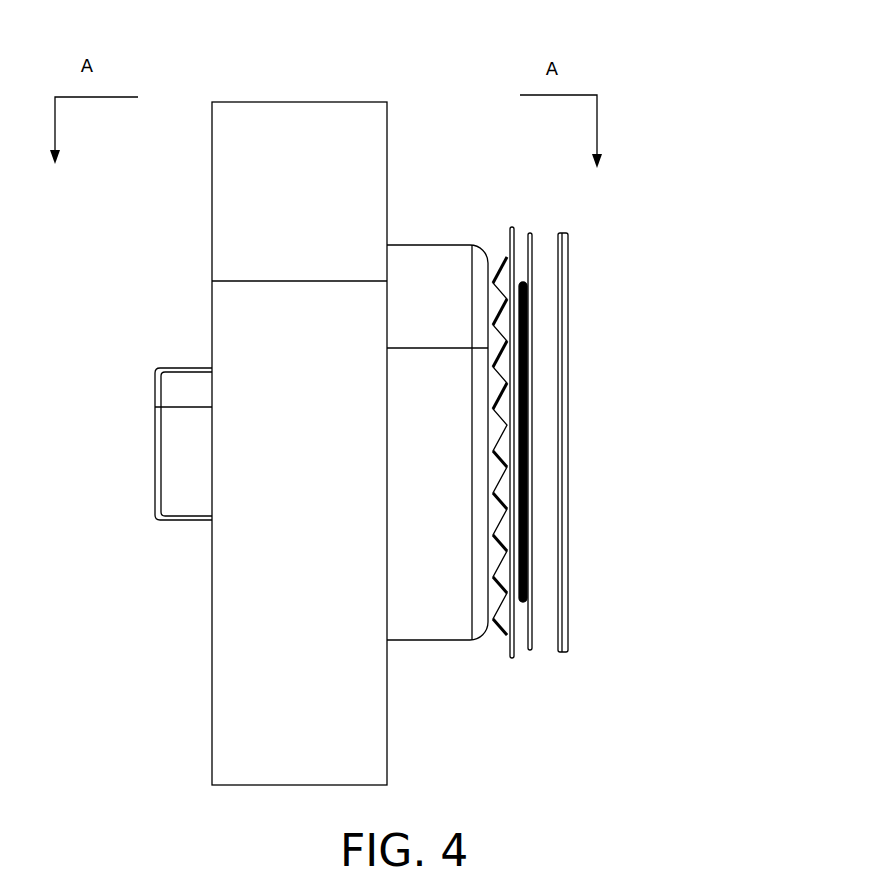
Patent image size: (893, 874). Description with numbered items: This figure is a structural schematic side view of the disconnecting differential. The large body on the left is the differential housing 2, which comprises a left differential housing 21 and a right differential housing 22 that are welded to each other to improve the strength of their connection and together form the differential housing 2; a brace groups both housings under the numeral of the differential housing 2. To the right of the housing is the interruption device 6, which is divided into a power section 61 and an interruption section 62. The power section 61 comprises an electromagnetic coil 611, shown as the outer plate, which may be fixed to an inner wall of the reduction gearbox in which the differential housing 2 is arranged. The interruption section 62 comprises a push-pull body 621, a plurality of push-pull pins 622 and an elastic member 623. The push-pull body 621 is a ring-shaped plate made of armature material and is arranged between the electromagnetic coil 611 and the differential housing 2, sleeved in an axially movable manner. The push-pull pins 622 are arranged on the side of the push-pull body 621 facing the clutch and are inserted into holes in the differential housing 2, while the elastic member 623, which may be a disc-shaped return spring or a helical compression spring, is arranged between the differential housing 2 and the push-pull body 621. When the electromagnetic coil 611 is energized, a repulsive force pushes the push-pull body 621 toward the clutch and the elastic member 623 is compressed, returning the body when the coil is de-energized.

The differential housing 2 is at (405, 47).
The left differential housing 21 is at (286, 348).
The right differential housing 22 is at (449, 300).
The interruption device 6 is at (708, 245).
The power section 61 is at (556, 268).
The electromagnetic coil 611 is at (541, 249).
The interruption section 62 is at (657, 288).
The push-pull body 621 is at (492, 373).
The push-pull pin 622 is at (516, 378).
The elastic member 623 is at (492, 332).